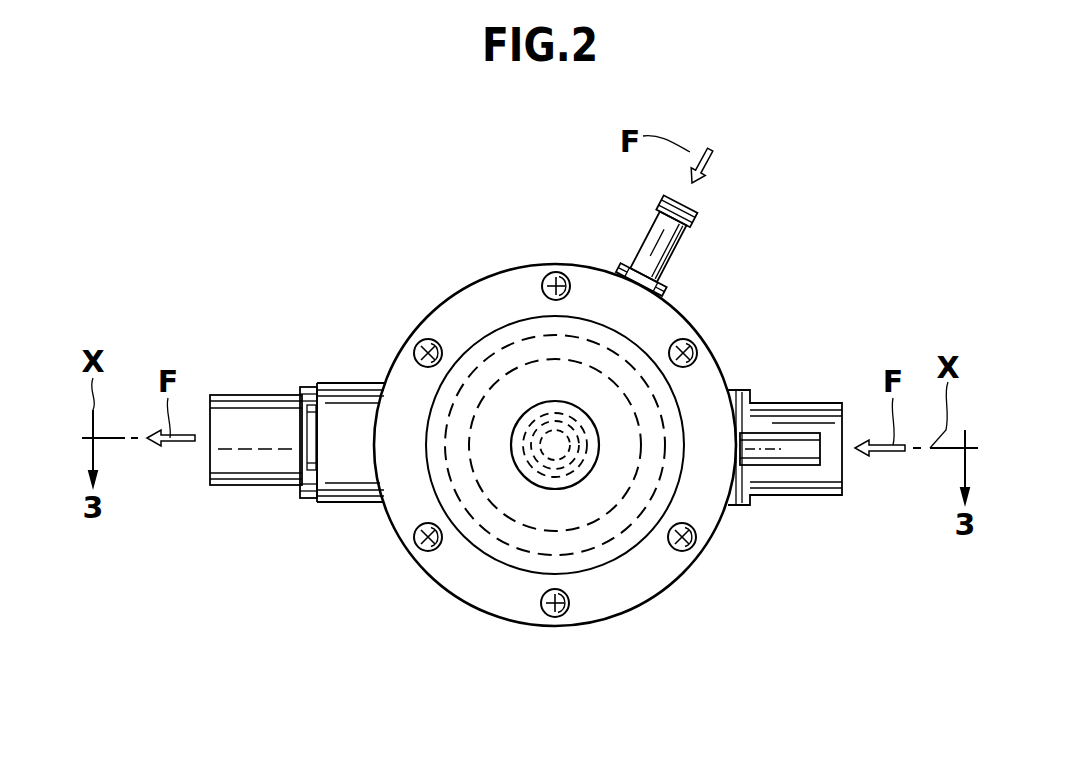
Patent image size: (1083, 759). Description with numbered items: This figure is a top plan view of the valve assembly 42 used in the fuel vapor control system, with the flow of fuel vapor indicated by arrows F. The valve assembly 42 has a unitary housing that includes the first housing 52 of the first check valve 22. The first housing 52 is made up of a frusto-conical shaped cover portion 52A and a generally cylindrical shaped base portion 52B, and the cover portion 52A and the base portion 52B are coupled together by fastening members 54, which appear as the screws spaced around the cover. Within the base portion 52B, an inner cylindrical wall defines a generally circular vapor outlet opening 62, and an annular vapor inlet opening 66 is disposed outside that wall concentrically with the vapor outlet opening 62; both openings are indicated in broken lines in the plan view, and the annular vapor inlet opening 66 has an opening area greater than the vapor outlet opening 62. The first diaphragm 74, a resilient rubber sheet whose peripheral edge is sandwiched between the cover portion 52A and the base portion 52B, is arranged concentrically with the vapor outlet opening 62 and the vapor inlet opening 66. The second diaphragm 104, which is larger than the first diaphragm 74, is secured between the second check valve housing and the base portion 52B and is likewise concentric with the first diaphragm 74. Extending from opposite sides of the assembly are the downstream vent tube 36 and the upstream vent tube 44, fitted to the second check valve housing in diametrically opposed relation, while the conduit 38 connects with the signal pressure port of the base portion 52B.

The first check valve 22 is at (680, 250).
The downstream vent tube 36 is at (258, 395).
The conduit 38 is at (800, 433).
The valve assembly 42 is at (476, 246).
The upstream vent tube 44 is at (800, 496).
The first housing 52 is at (622, 626).
The cover portion 52A is at (490, 600).
The base portion 52B is at (362, 493).
The fastening members 54 is at (557, 272).
The vapor outlet opening 62 is at (562, 442).
The annular vapor inlet opening 66 is at (583, 442).
The first diaphragm 74 is at (513, 368).
The second diaphragm 104 is at (620, 538).